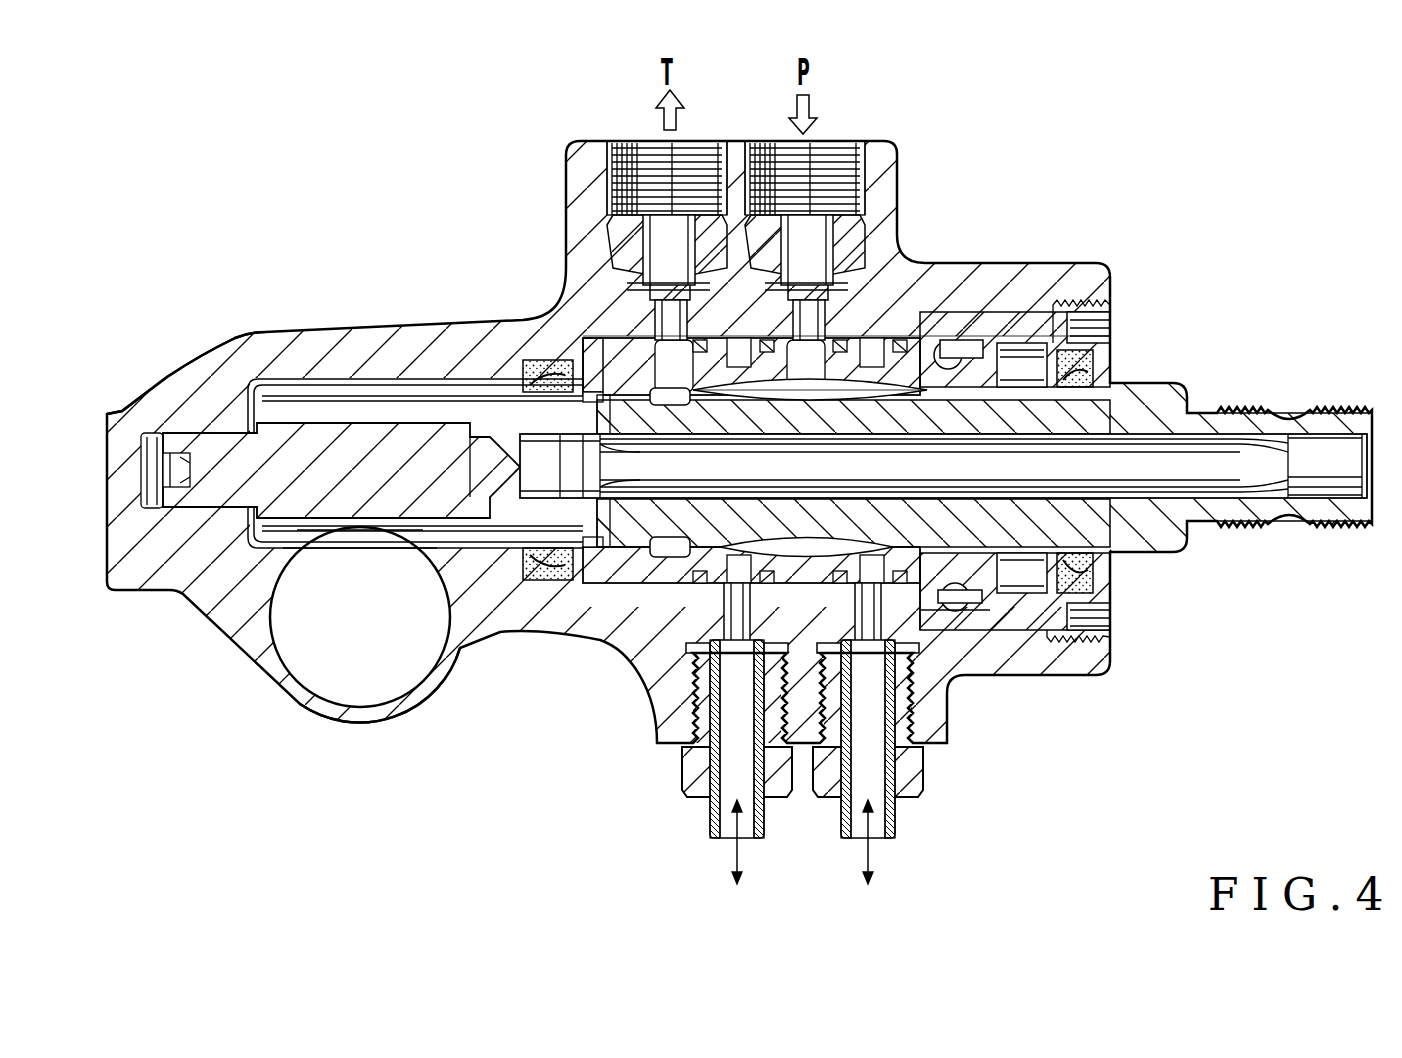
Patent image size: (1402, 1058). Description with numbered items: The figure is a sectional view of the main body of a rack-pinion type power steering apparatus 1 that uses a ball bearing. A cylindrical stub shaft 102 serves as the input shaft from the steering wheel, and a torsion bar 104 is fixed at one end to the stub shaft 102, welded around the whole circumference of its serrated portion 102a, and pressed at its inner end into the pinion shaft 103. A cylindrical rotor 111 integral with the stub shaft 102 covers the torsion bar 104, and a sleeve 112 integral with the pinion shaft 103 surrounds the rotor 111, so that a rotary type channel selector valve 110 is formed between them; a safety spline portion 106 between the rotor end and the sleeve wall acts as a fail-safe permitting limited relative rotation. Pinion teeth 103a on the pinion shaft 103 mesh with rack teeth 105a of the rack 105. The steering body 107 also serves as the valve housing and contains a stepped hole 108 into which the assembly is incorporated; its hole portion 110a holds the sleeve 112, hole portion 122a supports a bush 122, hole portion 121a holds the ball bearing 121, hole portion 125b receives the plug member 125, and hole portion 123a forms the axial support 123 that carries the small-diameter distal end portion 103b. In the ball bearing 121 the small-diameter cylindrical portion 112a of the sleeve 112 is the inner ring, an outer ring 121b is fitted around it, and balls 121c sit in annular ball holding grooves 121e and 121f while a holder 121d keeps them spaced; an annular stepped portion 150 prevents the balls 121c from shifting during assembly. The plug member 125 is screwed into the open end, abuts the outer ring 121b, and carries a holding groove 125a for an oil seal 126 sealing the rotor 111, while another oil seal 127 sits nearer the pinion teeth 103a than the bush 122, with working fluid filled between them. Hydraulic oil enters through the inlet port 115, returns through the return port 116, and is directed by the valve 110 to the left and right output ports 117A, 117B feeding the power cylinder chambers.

The power steering control valve assembly 1 is at (1180, 239).
The stub shaft 102 is at (1305, 418).
The serrated portion 102a is at (1332, 528).
The pinion shaft 103 is at (395, 488).
The pinion teeth 103a is at (277, 540).
The small-diameter distal end portion 103b is at (185, 500).
The torsion bar 104 is at (1183, 460).
The rack 105 is at (323, 643).
The rack teeth 105a is at (413, 540).
The safety spline portion 106 is at (625, 600).
The steering body 107 is at (453, 345).
The stepped hole 108 is at (415, 398).
The rotary type channel selector valve 110 is at (887, 331).
The hole portion 110a is at (660, 605).
The rotor 111 is at (880, 425).
The sleeve 112 is at (920, 332).
The small-diameter cylindrical portion 112a is at (957, 387).
The inlet port 115 is at (840, 165).
The return port 116 is at (705, 165).
The left output port 117A is at (740, 793).
The right output port 117B is at (877, 808).
The ball bearing 121 is at (975, 332).
The hole portion 121a is at (945, 628).
The outer ring 121b is at (980, 309).
The balls 121c is at (1020, 320).
The holder 121d is at (960, 625).
The annular ball holding groove 121e is at (945, 575).
The annular ball holding groove 121f is at (940, 640).
The bush 122 is at (590, 345).
The hole portion 122a is at (600, 605).
The axial support 123 is at (208, 428).
The hole portion 123a is at (175, 478).
The plug member 125 is at (1050, 303).
The holding groove 125a is at (1098, 350).
The hole portion 125b is at (1047, 632).
The oil seal 126 is at (1072, 343).
The oil seal 127 is at (548, 380).
The annular stepped portion 150 is at (925, 395).